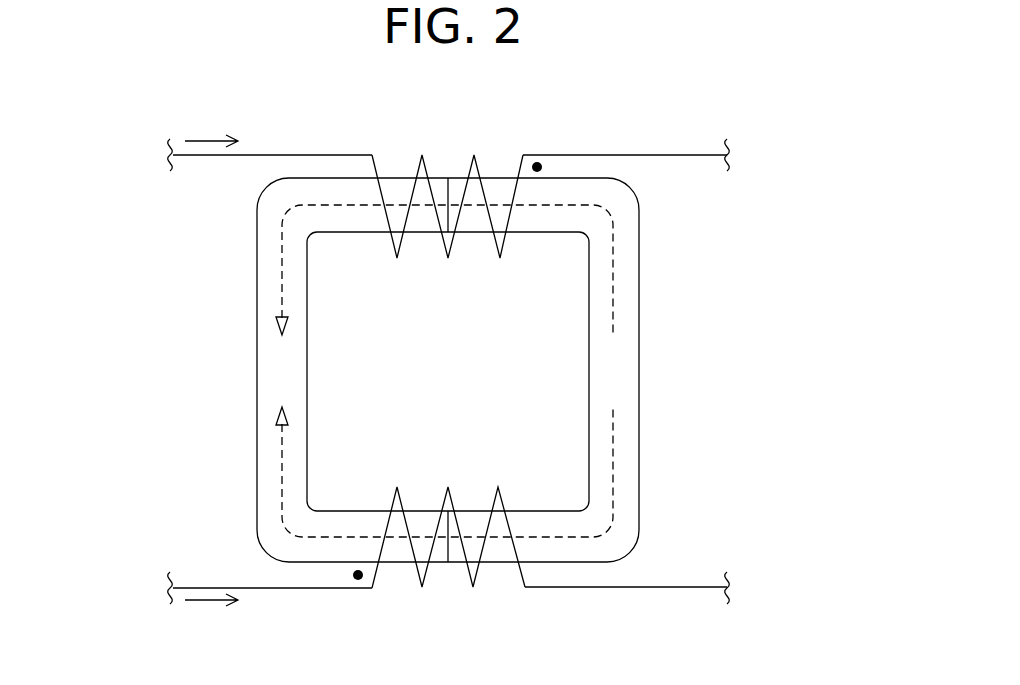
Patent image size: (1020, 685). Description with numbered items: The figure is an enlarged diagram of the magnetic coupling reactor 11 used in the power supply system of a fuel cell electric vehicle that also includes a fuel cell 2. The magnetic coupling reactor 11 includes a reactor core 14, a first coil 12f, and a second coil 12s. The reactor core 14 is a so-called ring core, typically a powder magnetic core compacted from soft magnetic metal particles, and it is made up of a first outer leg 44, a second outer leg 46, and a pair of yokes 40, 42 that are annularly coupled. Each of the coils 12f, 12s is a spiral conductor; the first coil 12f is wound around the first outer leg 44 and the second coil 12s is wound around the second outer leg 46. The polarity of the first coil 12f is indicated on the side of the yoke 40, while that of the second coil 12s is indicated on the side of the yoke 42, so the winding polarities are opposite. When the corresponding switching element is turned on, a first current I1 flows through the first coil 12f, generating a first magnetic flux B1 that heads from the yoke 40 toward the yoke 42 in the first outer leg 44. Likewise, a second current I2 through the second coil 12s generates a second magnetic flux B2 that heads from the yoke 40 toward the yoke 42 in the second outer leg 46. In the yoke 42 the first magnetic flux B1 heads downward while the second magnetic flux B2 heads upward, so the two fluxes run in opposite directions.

The fuel cell 2 is at (434, 370).
The magnetic coupling reactor 11 is at (728, 228).
The first coil 12f is at (396, 250).
The second coil 12s is at (438, 552).
The reactor core 14 is at (652, 372).
The yoke 40 is at (625, 453).
The yoke 42 is at (270, 453).
The first outer leg 44 is at (500, 190).
The second outer leg 46 is at (397, 552).
The first magnetic flux B1 is at (280, 252).
The second magnetic flux B2 is at (280, 492).
The first current I1 is at (199, 138).
The second current I2 is at (200, 611).